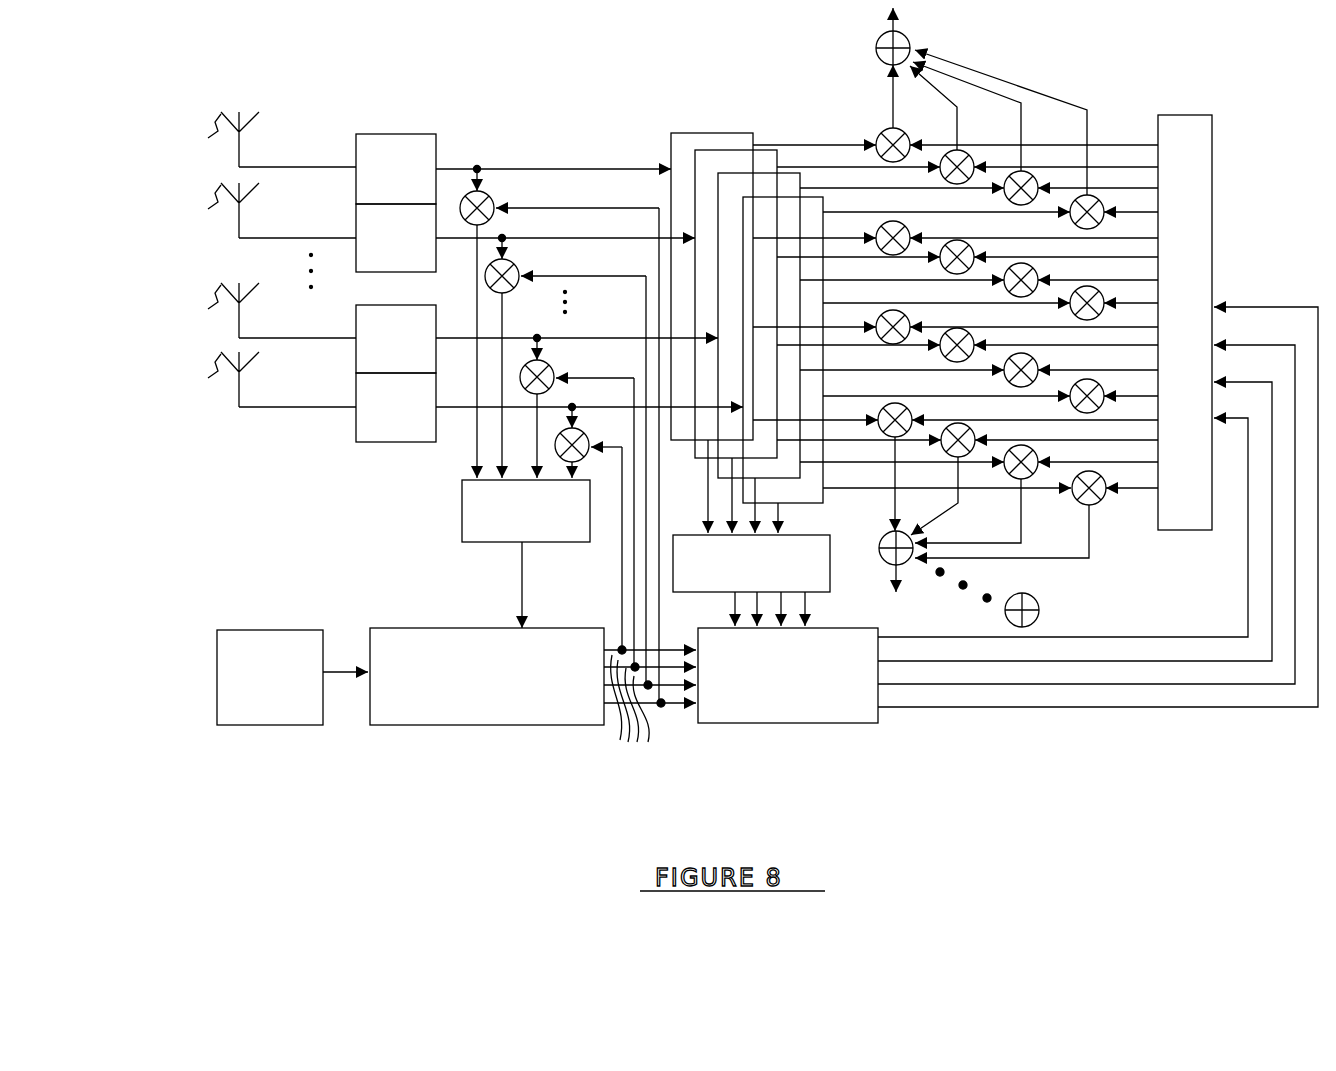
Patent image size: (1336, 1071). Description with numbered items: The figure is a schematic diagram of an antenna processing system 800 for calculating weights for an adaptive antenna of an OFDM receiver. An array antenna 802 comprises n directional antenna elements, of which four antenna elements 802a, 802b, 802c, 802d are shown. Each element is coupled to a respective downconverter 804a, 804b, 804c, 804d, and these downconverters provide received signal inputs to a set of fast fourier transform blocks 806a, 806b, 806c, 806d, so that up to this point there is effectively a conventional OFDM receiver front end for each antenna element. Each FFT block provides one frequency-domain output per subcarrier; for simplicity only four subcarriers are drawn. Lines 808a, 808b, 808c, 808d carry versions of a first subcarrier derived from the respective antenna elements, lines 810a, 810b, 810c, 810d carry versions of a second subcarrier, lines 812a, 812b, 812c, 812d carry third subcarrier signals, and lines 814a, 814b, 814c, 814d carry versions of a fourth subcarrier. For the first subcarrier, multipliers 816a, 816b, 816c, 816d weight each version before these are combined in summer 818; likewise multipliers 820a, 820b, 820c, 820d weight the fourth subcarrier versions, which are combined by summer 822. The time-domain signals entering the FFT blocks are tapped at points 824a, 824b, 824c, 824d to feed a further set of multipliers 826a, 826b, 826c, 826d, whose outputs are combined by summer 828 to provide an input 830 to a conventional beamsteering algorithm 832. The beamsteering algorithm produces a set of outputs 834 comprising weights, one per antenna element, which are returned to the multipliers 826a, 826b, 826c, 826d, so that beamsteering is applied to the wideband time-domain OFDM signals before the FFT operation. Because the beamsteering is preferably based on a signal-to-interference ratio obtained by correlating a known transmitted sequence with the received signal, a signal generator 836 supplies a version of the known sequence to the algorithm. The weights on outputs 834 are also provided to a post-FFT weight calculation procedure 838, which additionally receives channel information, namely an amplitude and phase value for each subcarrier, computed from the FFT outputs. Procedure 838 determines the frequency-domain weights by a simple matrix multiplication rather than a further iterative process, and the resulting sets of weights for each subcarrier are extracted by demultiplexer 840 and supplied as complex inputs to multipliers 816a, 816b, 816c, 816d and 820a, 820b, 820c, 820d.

The antenna processing system 800 is at (110, 820).
The array antenna 802 is at (272, 96).
The antenna element 802a is at (253, 139).
The antenna element 802b is at (251, 210).
The antenna element 802c is at (255, 310).
The antenna element 802d is at (257, 379).
The downconverter 804a is at (398, 133).
The downconverter 804b is at (356, 226).
The downconverter 804c is at (356, 320).
The downconverter 804d is at (370, 443).
The fast fourier transform block 806a is at (708, 133).
The fast fourier transform block 806b is at (760, 150).
The fast fourier transform block 806c is at (785, 173).
The fast fourier transform block 806d is at (748, 197).
The line 808a is at (814, 135).
The line 808b is at (858, 157).
The line 808c is at (902, 179).
The line 808d is at (946, 203).
The line 810a is at (814, 229).
The line 810b is at (858, 248).
The line 810c is at (902, 271).
The line 810d is at (946, 293).
The line 812a is at (814, 318).
The line 812b is at (858, 337).
The line 812c is at (902, 361).
The line 812d is at (946, 387).
The line 814a is at (815, 411).
The line 814b is at (859, 432).
The line 814c is at (902, 453).
The line 814d is at (947, 479).
The multiplier 816a is at (896, 130).
The multiplier 816b is at (962, 152).
The multiplier 816c is at (1030, 172).
The multiplier 816d is at (1100, 190).
The summer 818 is at (908, 34).
The multiplier 820a is at (912, 411).
The multiplier 820b is at (975, 433).
The multiplier 820c is at (1038, 455).
The multiplier 820d is at (1100, 502).
The summer 822 is at (908, 565).
The tap point 824a is at (478, 168).
The tap point 824b is at (503, 237).
The tap point 824c is at (538, 337).
The tap point 824d is at (573, 406).
The multiplier 826a is at (486, 194).
The multiplier 826b is at (486, 279).
The multiplier 826c is at (520, 392).
The multiplier 826d is at (570, 462).
The summer 828 is at (462, 518).
The input 830 is at (521, 578).
The beamsteering algorithm 832 is at (425, 726).
The outputs 834 is at (650, 707).
The signal generator 836 is at (256, 726).
The post-FFT weight calculation procedure 838 is at (822, 726).
The demultiplexer 840 is at (1212, 183).